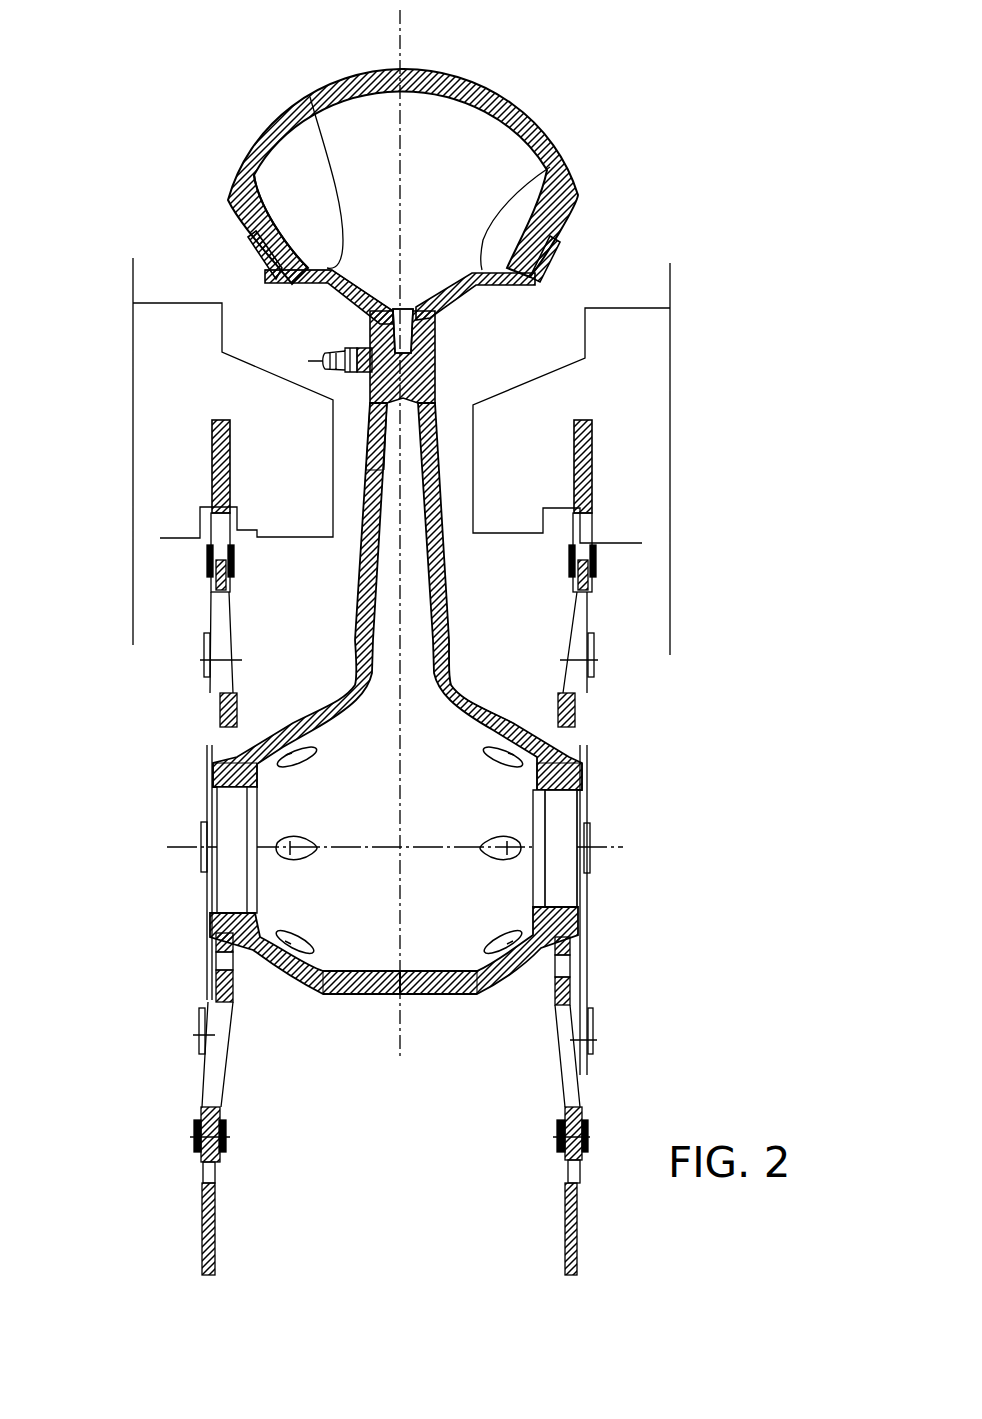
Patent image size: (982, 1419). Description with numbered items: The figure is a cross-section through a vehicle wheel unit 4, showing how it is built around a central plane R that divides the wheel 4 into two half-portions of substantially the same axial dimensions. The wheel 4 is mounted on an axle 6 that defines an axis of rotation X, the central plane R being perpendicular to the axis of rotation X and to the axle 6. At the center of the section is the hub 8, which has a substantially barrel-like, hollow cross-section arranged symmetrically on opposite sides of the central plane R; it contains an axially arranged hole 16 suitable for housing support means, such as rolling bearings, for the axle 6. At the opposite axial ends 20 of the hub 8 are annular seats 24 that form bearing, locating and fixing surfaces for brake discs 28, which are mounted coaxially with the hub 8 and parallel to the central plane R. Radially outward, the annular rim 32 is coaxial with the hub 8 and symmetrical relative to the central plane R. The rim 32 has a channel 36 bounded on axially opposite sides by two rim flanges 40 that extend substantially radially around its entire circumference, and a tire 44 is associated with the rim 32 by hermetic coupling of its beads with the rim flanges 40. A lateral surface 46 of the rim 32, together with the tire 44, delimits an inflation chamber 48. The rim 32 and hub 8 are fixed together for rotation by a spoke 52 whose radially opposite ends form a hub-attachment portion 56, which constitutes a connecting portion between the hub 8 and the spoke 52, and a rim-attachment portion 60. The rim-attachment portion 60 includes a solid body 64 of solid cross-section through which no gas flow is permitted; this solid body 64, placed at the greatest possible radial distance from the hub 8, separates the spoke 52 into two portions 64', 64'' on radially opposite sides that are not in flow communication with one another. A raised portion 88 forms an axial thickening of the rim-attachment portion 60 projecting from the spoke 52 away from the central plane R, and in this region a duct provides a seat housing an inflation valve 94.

The vehicle wheel unit 4 is at (178, 114).
The channel 36 is at (260, 142).
The inflation chamber 48 is at (350, 143).
The tire 44 is at (487, 78).
The lateral surface 46 is at (550, 165).
The rim flanges 40 is at (250, 236).
The annular rim 32 is at (301, 290).
The inflation valve 94 is at (334, 341).
The solid body 64 is at (303, 356).
The rim-attachment portion 60 is at (444, 327).
The spoke portion 64' is at (436, 356).
The raised portion 88 is at (374, 405).
The spoke 52 is at (368, 557).
The spoke portion 64'' is at (500, 596).
The hub-attachment portion 56 is at (468, 689).
The brake discs 28 is at (220, 613).
The annular seats 24 is at (212, 757).
The hole 16 is at (228, 880).
The axle 6 is at (592, 836).
The hub 8 is at (298, 990).
The axial ends 20 is at (246, 980).
The central plane R is at (412, 57).
The axis of rotation X is at (180, 845).